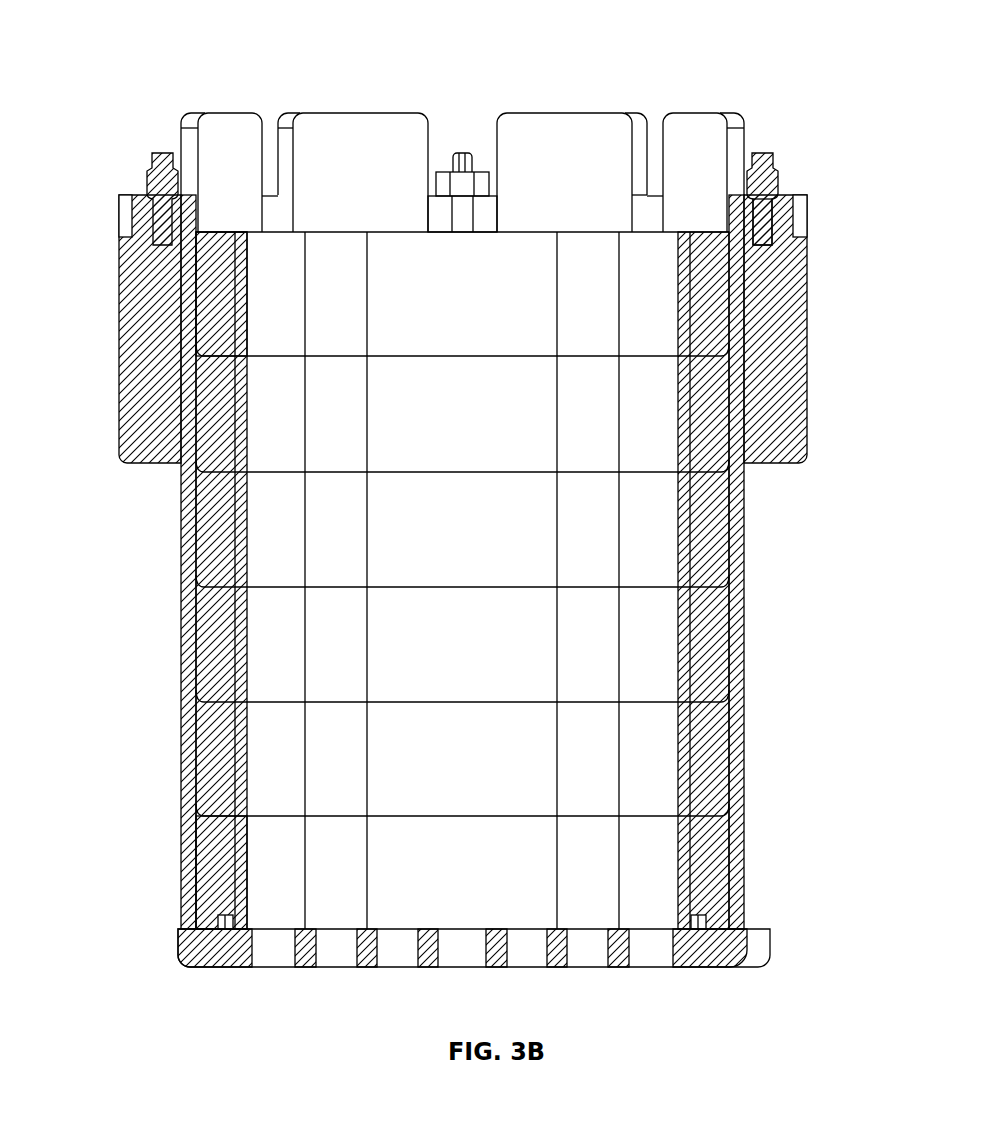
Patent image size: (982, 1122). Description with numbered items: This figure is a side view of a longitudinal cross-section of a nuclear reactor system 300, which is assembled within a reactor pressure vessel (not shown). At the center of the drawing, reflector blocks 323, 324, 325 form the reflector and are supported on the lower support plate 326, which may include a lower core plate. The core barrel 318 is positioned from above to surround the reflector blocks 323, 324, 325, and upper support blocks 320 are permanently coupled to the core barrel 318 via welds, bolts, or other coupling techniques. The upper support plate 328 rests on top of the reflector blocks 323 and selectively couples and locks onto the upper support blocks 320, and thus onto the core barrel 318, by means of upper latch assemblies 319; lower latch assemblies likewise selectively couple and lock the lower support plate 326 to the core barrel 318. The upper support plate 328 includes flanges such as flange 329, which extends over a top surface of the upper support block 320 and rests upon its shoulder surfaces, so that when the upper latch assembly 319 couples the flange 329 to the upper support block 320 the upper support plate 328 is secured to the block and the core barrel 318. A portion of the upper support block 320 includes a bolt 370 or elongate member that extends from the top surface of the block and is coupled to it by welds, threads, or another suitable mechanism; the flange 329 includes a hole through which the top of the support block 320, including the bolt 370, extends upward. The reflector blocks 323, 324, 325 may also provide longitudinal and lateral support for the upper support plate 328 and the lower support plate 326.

The nuclear reactor system 300 is at (189, 42).
The core barrel 318 is at (749, 557).
The latch assembly 319 is at (779, 158).
The upper support block 320 is at (120, 329).
The reflector block 323 is at (216, 334).
The reflector block 324 is at (213, 615).
The reflector block 325 is at (207, 807).
The lower support plate 326 is at (211, 967).
The upper support plate 328 is at (270, 188).
The flange 329 is at (121, 217).
The bolt 370 is at (774, 215).